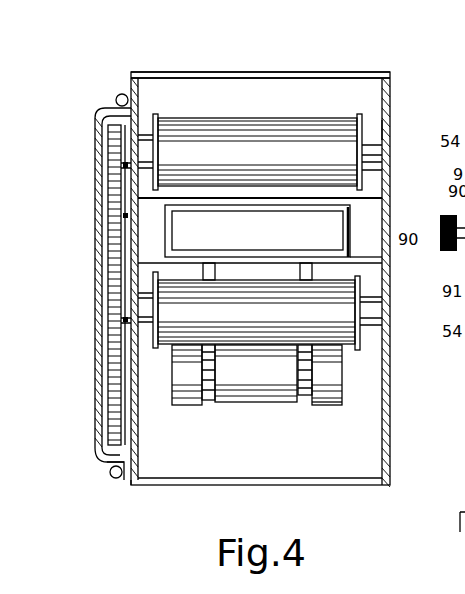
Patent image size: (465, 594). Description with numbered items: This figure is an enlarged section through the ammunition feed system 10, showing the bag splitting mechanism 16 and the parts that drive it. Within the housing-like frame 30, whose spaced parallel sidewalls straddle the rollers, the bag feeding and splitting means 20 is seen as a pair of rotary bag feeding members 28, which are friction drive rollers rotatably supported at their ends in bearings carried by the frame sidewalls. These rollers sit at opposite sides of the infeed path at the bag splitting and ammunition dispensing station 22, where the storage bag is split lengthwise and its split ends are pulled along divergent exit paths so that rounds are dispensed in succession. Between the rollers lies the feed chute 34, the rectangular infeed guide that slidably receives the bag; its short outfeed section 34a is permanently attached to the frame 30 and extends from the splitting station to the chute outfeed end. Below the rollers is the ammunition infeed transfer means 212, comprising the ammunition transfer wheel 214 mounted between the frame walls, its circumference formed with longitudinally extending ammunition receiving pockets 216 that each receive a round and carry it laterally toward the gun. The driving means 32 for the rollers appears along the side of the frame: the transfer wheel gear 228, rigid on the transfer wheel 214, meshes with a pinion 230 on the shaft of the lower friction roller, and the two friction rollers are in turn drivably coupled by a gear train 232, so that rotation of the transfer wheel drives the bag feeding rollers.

The feed system 10 is at (288, 65).
The bag splitting mechanism 16 is at (355, 105).
The bag feeding and splitting means 20 is at (221, 116).
The bag splitting and ammunition dispensing station 22 is at (158, 70).
The rotary bag feeding members 28 is at (260, 160).
The frame 30 is at (392, 130).
The driving means 32 is at (103, 213).
The feed chute 34 is at (355, 231).
The feed chute outfeed section 34a is at (372, 257).
The ammunition infeed transfer means 212 is at (346, 371).
The ammunition transfer wheel 214 is at (340, 403).
The ammunition receiving pockets 216 is at (280, 352).
The transfer wheel gear 228 is at (101, 447).
The pinion 230 is at (115, 336).
The gear train 232 is at (115, 271).